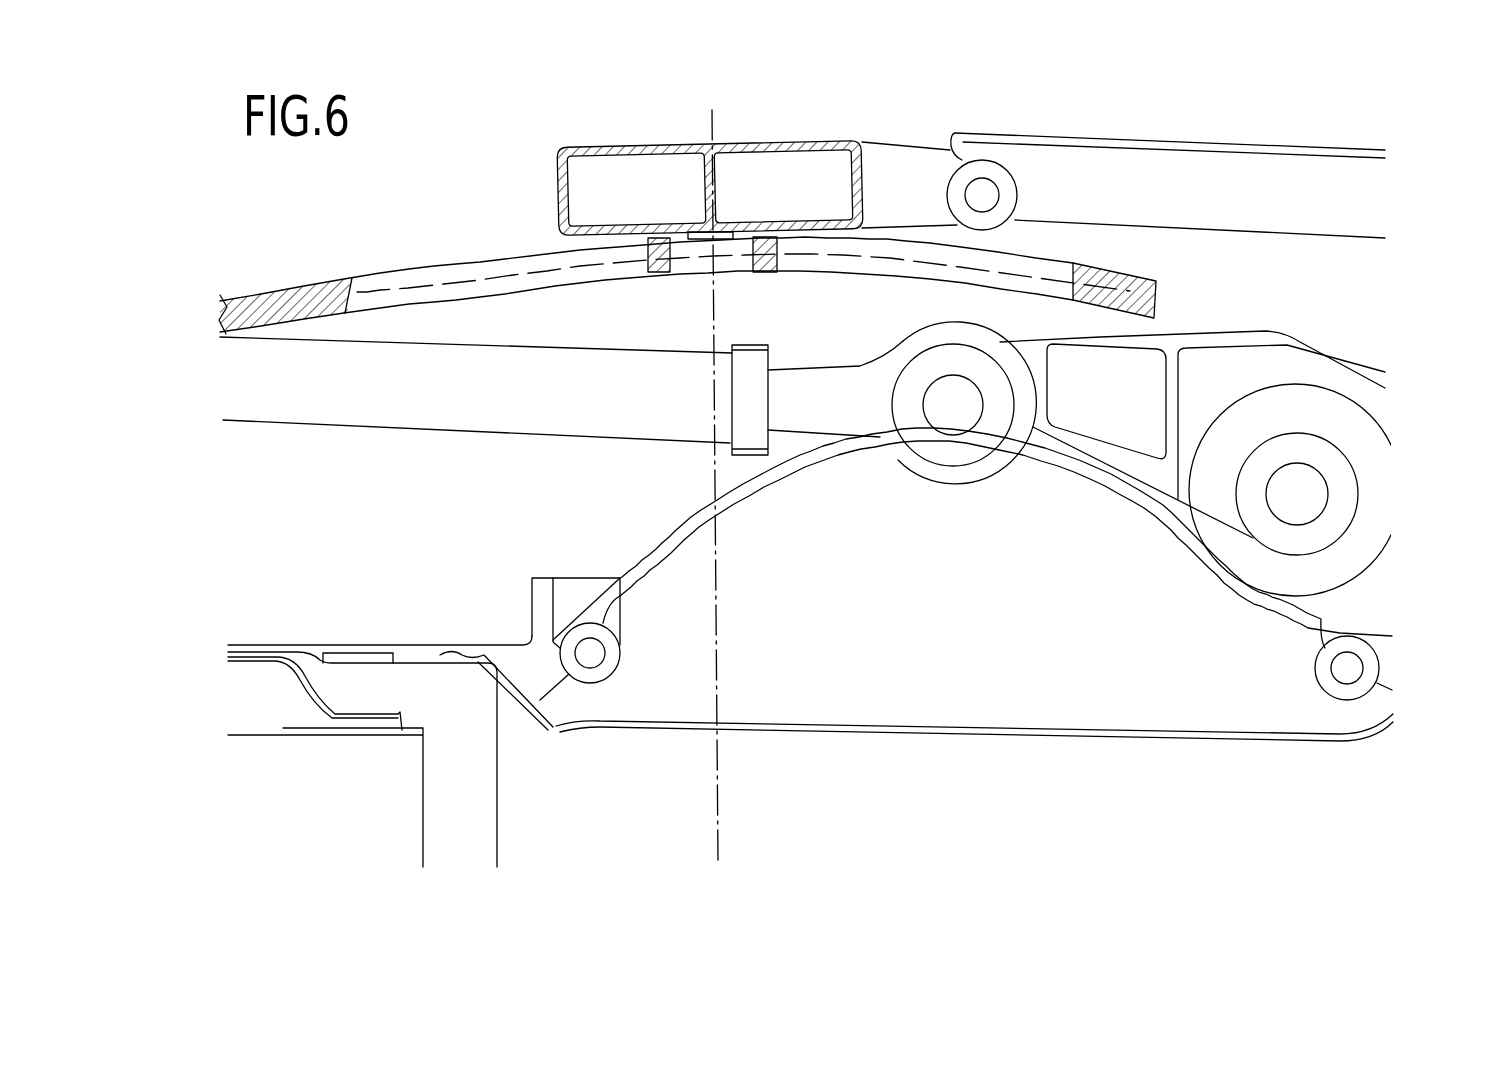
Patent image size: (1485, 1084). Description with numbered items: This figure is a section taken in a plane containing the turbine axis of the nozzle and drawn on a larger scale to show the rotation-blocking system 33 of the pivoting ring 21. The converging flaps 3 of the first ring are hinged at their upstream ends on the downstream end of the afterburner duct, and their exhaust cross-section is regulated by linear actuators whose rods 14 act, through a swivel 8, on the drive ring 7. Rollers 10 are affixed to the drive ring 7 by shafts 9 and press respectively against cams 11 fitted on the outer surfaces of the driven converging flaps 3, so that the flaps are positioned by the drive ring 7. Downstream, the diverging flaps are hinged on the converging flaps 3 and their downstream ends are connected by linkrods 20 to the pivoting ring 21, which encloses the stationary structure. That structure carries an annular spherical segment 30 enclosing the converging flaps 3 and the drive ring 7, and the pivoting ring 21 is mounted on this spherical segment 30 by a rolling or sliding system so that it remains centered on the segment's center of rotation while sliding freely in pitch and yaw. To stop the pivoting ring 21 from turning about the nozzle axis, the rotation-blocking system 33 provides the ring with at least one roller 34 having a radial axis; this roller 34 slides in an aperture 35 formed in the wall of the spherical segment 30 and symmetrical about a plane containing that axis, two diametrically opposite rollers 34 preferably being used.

The converging flaps 3 is at (1050, 737).
The drive ring 7 is at (1330, 338).
The swivel 8 is at (947, 415).
The shaft 9 is at (1313, 490).
The roller 10 is at (1215, 550).
The cam 11 is at (1117, 497).
The rod of linear actuator 14 is at (522, 417).
The linkrod 20 is at (1093, 163).
The pivoting ring 21 is at (622, 147).
The annular spherical segment 30 is at (1137, 283).
The rotation-blocking system 33 is at (636, 287).
The roller 34 is at (767, 262).
The aperture 35 is at (383, 280).